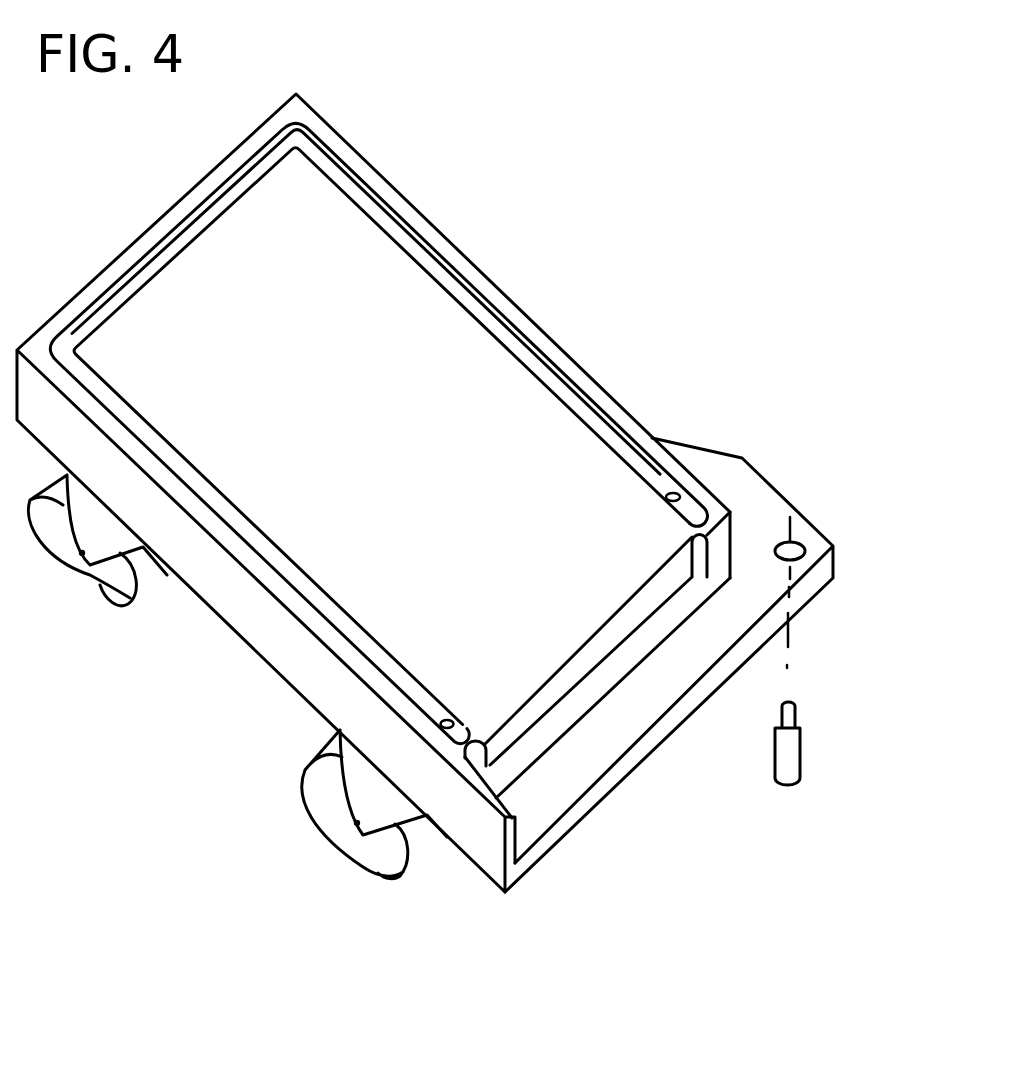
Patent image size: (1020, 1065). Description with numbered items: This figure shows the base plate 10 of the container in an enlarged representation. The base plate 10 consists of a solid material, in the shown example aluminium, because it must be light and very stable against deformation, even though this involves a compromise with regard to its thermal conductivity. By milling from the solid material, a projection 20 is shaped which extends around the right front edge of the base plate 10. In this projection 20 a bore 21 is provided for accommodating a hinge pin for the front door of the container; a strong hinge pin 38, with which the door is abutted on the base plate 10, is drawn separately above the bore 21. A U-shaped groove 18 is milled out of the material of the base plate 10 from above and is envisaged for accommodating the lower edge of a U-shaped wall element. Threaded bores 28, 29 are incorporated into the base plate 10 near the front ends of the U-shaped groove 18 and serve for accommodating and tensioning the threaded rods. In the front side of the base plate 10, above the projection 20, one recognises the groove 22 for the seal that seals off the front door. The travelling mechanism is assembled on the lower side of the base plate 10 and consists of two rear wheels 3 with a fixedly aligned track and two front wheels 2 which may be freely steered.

The front wheel 2 is at (320, 798).
The rear wheel 3 is at (103, 582).
The base plate 10 is at (427, 333).
The U-shaped groove 18 is at (360, 197).
The projection 20 is at (648, 690).
The bore 21 is at (797, 543).
The groove 22 is at (540, 722).
The threaded bore 28 is at (444, 720).
The threaded bore 29 is at (670, 492).
The hinge pin 38 is at (792, 760).